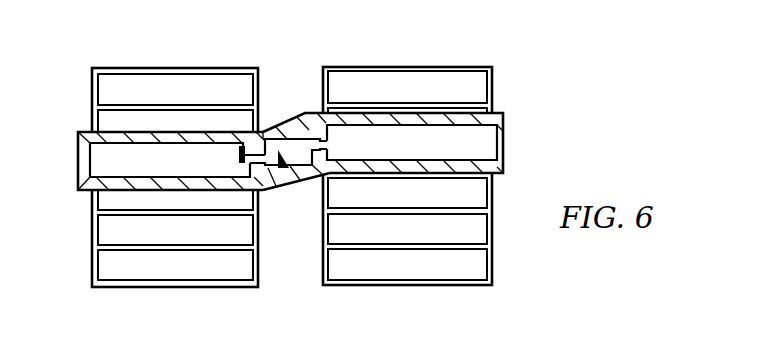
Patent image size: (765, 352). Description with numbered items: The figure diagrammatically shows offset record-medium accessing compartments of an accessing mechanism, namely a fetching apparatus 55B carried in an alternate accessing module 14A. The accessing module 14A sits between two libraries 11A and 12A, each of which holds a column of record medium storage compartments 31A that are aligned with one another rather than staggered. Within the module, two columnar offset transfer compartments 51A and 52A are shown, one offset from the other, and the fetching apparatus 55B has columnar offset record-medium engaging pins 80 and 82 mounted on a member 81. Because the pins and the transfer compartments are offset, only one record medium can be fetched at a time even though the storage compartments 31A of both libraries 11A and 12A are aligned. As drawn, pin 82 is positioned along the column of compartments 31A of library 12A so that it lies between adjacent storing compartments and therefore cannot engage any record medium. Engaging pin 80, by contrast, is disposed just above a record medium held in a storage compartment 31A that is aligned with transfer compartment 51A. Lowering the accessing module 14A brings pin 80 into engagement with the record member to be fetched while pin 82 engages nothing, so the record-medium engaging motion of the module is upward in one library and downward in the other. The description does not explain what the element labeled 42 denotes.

The library 11A is at (161, 60).
The library 12A is at (397, 67).
The accessing module 14A is at (305, 113).
The record medium storage compartment 31A is at (150, 270).
The intermediate layer 42 is at (415, 240).
The transfer compartment 51A is at (492, 141).
The transfer compartment 52A is at (97, 158).
The fetching apparatus 55B is at (288, 169).
The record-medium engaging pin 80 is at (239, 155).
The member 81 is at (309, 172).
The record-medium engaging pin 82 is at (337, 141).